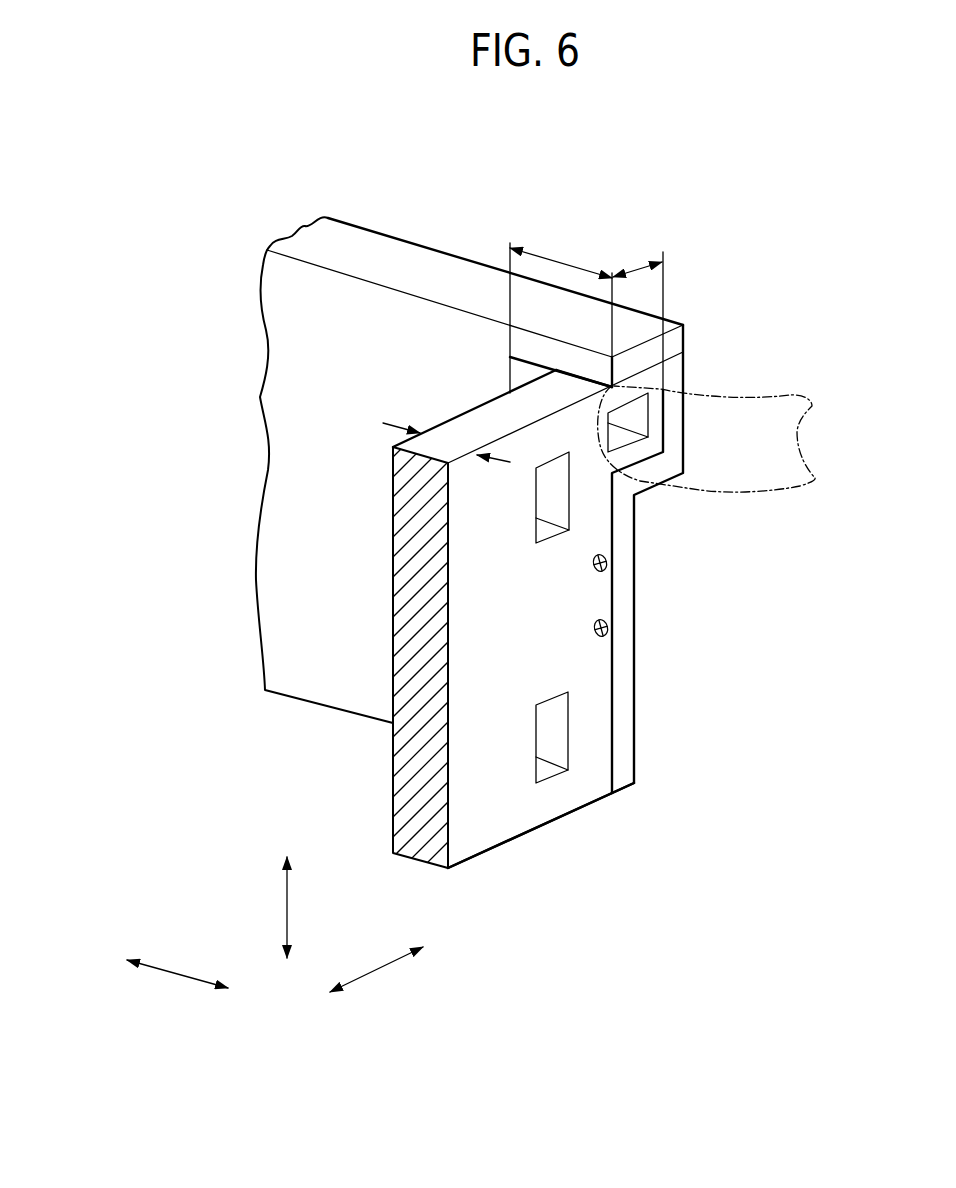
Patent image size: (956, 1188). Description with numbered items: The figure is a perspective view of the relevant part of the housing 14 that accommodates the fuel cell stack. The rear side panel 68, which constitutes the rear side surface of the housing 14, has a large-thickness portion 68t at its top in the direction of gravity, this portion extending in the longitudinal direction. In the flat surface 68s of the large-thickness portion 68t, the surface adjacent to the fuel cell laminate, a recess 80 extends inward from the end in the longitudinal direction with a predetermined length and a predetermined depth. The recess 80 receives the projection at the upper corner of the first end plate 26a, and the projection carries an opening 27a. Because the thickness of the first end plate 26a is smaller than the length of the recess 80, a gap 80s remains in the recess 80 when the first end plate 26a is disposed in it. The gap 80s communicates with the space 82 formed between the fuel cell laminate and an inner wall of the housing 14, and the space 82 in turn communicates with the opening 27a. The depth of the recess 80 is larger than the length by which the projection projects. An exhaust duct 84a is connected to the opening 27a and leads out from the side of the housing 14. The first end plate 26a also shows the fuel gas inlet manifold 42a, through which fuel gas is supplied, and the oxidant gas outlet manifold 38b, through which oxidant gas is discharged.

The housing 14 is at (618, 102).
The first end plate 26a is at (573, 806).
The opening 27a is at (640, 413).
The oxidant gas outlet manifold 38b is at (542, 735).
The fuel gas inlet manifold 42a is at (542, 498).
The rear side panel 68 is at (637, 612).
The flat surface 68s is at (440, 323).
The large-thickness portion 68t is at (680, 373).
The recess 80 is at (663, 433).
The gap 80s is at (520, 377).
The space 82 is at (300, 357).
The exhaust duct 84a is at (770, 478).